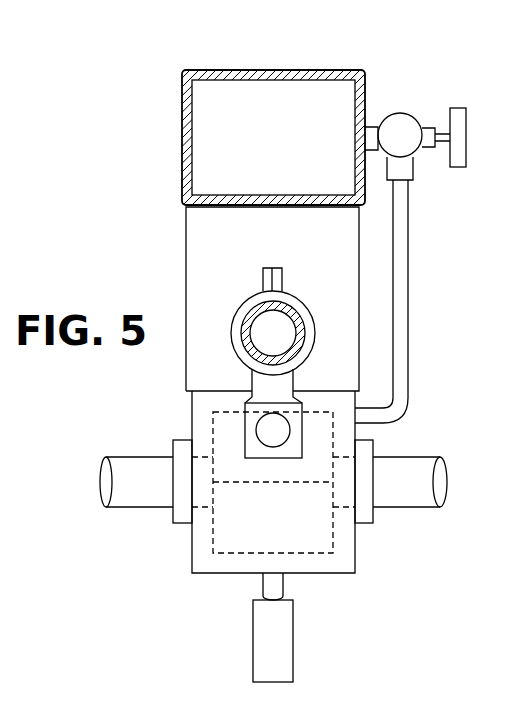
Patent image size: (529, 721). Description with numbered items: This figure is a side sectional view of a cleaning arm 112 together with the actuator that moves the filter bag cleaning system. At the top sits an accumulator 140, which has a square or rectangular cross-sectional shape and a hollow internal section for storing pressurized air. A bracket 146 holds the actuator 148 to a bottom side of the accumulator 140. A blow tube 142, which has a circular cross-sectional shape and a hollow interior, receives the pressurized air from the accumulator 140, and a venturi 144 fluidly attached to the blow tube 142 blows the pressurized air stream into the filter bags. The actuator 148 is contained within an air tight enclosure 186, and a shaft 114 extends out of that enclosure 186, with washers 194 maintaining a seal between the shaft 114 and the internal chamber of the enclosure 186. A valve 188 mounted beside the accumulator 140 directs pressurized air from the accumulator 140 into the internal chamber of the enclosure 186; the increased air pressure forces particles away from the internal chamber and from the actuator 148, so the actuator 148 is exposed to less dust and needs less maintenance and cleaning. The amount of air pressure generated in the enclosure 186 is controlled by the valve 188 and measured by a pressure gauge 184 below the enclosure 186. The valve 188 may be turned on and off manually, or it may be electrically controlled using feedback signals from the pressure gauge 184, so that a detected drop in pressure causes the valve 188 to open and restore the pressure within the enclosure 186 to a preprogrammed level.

The cleaning arm 112 is at (140, 117).
The accumulator 140 is at (278, 70).
The valve 188 is at (400, 113).
The bracket 146 is at (186, 268).
The blow tube 142 is at (306, 311).
The venturi 144 is at (273, 458).
The enclosure 186 is at (357, 558).
The actuator 148 is at (212, 552).
The washers 194 is at (176, 440).
The shaft 114 is at (416, 457).
The pressure gauge 184 is at (253, 638).